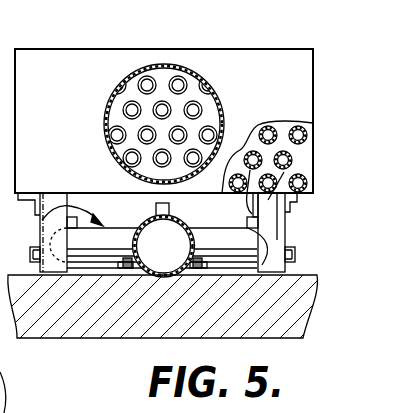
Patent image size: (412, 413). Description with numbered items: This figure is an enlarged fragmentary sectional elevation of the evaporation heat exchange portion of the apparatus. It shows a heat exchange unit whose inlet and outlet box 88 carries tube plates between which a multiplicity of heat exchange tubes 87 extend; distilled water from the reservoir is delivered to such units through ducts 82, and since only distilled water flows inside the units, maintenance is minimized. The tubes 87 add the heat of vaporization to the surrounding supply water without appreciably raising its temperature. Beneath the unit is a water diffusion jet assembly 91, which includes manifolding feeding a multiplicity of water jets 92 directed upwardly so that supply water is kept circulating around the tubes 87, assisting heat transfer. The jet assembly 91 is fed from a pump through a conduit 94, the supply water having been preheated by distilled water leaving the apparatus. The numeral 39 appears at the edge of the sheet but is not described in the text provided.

The duct 82 is at (123, 78).
The heat exchange tube 87 is at (179, 83).
The inlet and outlet box 88 is at (256, 60).
The water diffusion jet assembly 91 is at (42, 219).
The water jet 92 is at (247, 214).
The conduit 94 is at (148, 277).
The element of adjacent figure 39 is at (4, 362).